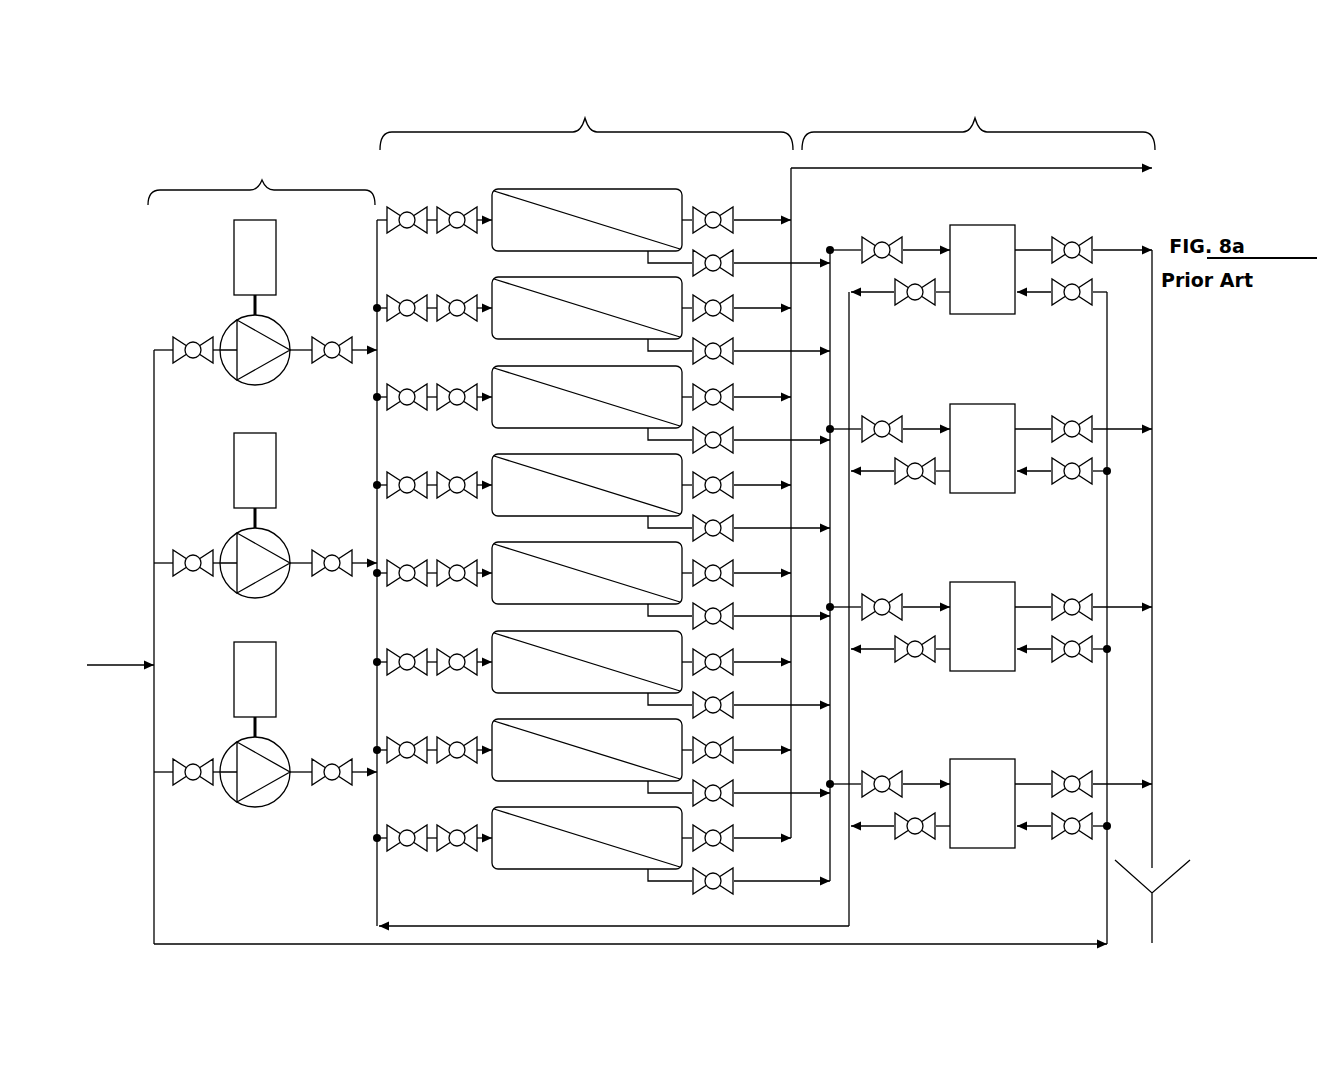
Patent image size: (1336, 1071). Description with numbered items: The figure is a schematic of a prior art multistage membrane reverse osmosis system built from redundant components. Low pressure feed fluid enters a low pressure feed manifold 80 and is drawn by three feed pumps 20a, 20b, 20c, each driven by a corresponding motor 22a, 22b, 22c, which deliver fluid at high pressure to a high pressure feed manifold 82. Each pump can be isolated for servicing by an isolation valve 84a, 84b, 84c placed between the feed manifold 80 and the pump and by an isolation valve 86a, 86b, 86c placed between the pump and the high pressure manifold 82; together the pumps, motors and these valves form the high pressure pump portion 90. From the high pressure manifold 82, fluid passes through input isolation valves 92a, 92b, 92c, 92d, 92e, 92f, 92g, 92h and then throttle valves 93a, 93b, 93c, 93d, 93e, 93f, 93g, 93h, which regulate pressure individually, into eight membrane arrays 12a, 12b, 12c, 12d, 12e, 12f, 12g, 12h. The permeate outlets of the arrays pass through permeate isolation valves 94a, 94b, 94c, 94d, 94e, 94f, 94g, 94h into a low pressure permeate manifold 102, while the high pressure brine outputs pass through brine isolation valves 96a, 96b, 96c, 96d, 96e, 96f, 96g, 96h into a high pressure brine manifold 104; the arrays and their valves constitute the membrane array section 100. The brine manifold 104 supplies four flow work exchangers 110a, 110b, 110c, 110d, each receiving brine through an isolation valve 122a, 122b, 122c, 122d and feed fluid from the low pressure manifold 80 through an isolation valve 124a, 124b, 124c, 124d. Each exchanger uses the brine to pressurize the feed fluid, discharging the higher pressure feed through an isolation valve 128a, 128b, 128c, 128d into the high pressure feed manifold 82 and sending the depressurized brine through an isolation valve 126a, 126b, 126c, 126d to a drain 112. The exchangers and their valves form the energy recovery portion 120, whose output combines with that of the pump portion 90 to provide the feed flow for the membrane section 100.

The membrane array 12a is at (587, 209).
The membrane array 12b is at (587, 297).
The membrane array 12c is at (587, 386).
The membrane array 12d is at (587, 474).
The membrane array 12e is at (587, 562).
The membrane array 12f is at (587, 651).
The membrane array 12g is at (587, 739).
The membrane array 12h is at (587, 827).
The feed pump 20a is at (286, 362).
The feed pump 20b is at (286, 575).
The feed pump 20c is at (286, 784).
The motor 22a is at (225, 266).
The motor 22b is at (225, 479).
The motor 22c is at (226, 688).
The low pressure feed manifold 80 is at (152, 398).
The high pressure feed manifold 82 is at (377, 238).
The isolation valve 84a is at (187, 326).
The isolation valve 84b is at (187, 539).
The isolation valve 84c is at (187, 748).
The isolation valve 86a is at (333, 326).
The isolation valve 86b is at (333, 539).
The isolation valve 86c is at (333, 748).
The high pressure pump portion 90 is at (261, 179).
The input isolation valve 92a is at (405, 201).
The input isolation valve 92b is at (403, 289).
The input isolation valve 92c is at (402, 378).
The input isolation valve 92d is at (403, 466).
The input isolation valve 92e is at (403, 554).
The input isolation valve 92f is at (402, 643).
The input isolation valve 92g is at (403, 731).
The input isolation valve 92h is at (403, 819).
The throttle valve 93a is at (459, 201).
The throttle valve 93b is at (459, 289).
The throttle valve 93c is at (459, 378).
The throttle valve 93d is at (459, 466).
The throttle valve 93e is at (459, 554).
The throttle valve 93f is at (459, 643).
The throttle valve 93g is at (459, 731).
The throttle valve 93h is at (459, 819).
The permeate isolation valve 94a is at (736, 209).
The permeate isolation valve 94b is at (736, 297).
The permeate isolation valve 94c is at (736, 386).
The permeate isolation valve 94d is at (736, 474).
The permeate isolation valve 94e is at (736, 562).
The permeate isolation valve 94f is at (736, 651).
The permeate isolation valve 94g is at (736, 739).
The permeate isolation valve 94h is at (736, 827).
The brine isolation valve 96a is at (739, 253).
The brine isolation valve 96b is at (739, 341).
The brine isolation valve 96c is at (739, 430).
The brine isolation valve 96d is at (739, 518).
The brine isolation valve 96e is at (739, 606).
The brine isolation valve 96f is at (739, 695).
The brine isolation valve 96g is at (739, 783).
The brine isolation valve 96h is at (739, 871).
The membrane array section 100 is at (586, 119).
The low pressure permeate manifold 102 is at (940, 168).
The high pressure brine manifold 104 is at (833, 247).
The flow work exchanger 110a is at (988, 244).
The flow work exchanger 110b is at (988, 423).
The flow work exchanger 110c is at (987, 601).
The flow work exchanger 110d is at (988, 778).
The drain 112 is at (1152, 912).
The energy recovery portion 120 is at (978, 119).
The isolation valve 122a is at (888, 226).
The isolation valve 122b is at (888, 405).
The isolation valve 122c is at (888, 583).
The isolation valve 122d is at (888, 760).
The isolation valve 124a is at (1062, 311).
The isolation valve 124b is at (1064, 490).
The isolation valve 124c is at (1064, 668).
The isolation valve 124d is at (1064, 845).
The isolation valve 126a is at (1083, 226).
The isolation valve 126b is at (1083, 405).
The isolation valve 126c is at (1083, 583).
The isolation valve 126d is at (1083, 760).
The isolation valve 128a is at (900, 311).
The isolation valve 128b is at (900, 490).
The isolation valve 128c is at (900, 668).
The isolation valve 128d is at (900, 845).